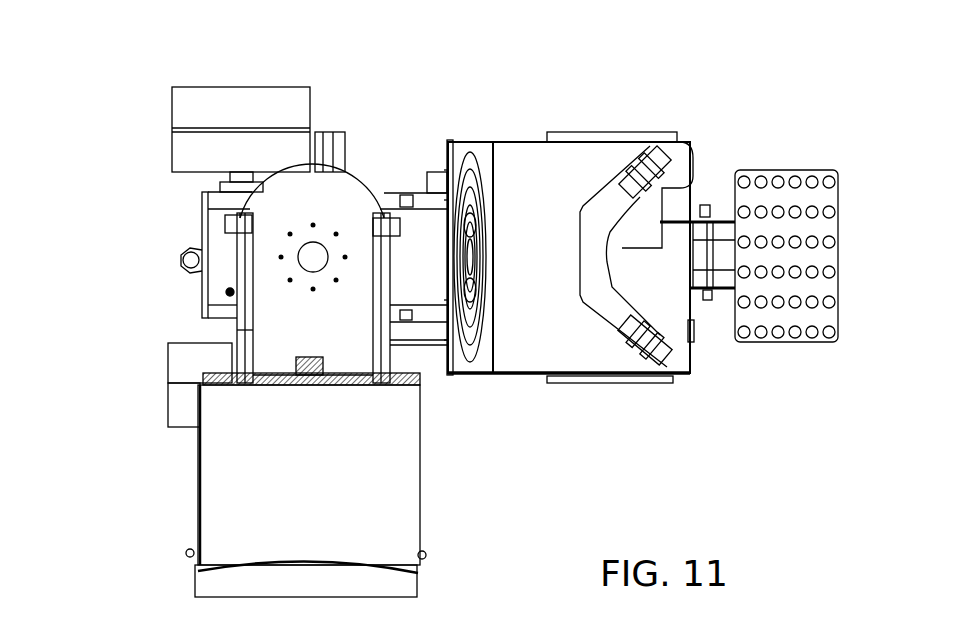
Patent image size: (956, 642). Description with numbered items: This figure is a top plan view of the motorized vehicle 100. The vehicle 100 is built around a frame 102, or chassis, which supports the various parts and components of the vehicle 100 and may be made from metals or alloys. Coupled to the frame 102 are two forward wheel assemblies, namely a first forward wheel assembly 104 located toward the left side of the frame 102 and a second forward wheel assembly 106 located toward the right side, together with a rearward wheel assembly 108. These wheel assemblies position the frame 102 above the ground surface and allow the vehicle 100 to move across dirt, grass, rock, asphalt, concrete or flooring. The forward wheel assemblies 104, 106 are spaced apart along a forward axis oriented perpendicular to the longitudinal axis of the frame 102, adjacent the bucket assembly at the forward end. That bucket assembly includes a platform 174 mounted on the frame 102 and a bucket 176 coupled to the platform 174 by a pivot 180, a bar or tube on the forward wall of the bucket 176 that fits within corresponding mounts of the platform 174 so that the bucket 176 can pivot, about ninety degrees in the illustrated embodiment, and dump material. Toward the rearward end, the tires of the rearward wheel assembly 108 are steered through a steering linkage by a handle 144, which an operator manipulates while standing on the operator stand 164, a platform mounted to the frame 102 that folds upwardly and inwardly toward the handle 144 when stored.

The vehicle 100 is at (751, 96).
The frame 102 is at (417, 197).
The first forward wheel assembly 104 is at (141, 397).
The second forward wheel assembly 106 is at (156, 111).
The rearward wheel assembly 108 is at (612, 398).
The handle 144 is at (612, 192).
The operator stand 164 is at (783, 343).
The platform 174 is at (260, 332).
The bucket 176 is at (190, 513).
The pivot 180 is at (348, 370).